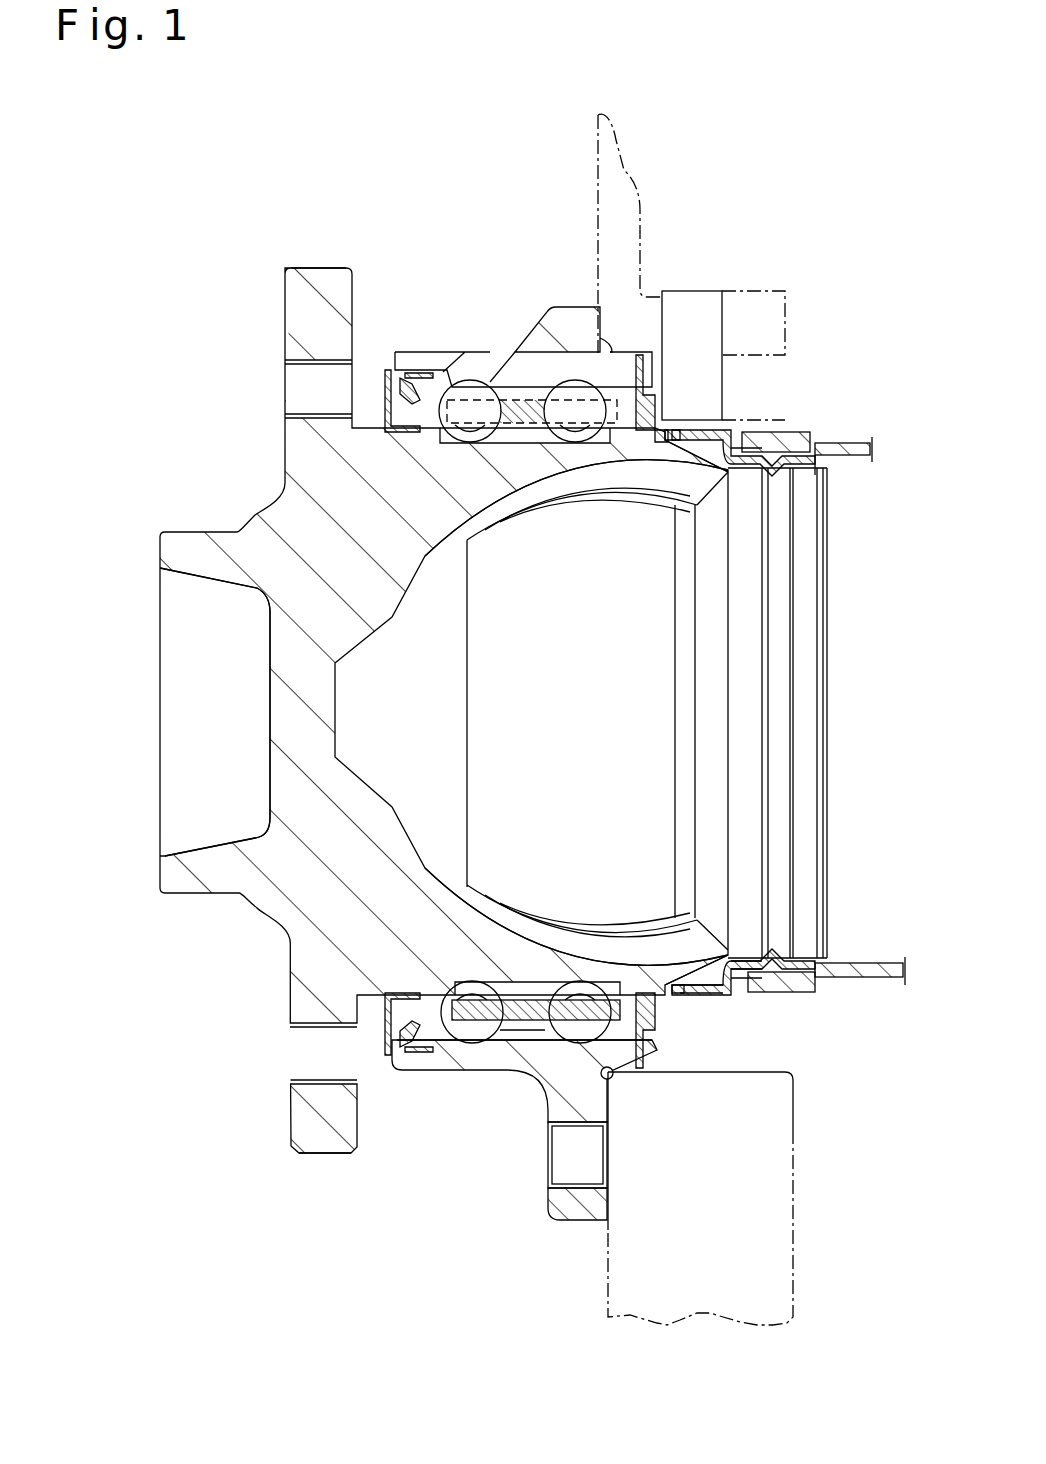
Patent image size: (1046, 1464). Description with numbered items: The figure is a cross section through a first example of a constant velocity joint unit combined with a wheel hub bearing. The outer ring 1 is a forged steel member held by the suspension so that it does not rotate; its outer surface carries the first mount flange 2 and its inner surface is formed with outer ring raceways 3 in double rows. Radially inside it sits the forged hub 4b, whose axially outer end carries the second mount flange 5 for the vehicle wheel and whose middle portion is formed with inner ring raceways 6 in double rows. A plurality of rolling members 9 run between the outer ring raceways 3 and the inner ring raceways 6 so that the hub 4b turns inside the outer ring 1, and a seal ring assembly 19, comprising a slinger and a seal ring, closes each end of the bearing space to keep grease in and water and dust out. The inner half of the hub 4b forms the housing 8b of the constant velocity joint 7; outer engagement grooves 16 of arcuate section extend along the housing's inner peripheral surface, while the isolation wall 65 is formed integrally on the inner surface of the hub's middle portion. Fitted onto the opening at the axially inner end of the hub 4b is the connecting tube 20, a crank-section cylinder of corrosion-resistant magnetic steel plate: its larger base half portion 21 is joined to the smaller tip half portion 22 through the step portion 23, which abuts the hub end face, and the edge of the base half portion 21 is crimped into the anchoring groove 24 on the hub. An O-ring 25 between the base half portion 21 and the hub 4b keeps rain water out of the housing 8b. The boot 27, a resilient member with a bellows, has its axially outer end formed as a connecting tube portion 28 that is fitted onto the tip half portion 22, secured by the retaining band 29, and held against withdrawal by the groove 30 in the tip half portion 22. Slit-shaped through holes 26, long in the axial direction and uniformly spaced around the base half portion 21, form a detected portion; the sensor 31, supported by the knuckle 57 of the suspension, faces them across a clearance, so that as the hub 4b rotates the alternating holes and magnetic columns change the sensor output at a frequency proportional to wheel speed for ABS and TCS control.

The outer ring 1 is at (585, 318).
The first mount flange 2 is at (578, 1208).
The outer ring raceways 3 is at (458, 380).
The hub 4b is at (310, 478).
The second mount flange 5 is at (300, 318).
The inner ring raceways 6 is at (465, 985).
The constant velocity joint 7 is at (693, 737).
The housing 8b is at (700, 1000).
The rolling members 9 is at (565, 390).
The outer engagement grooves 16 is at (525, 480).
The seal ring assembly 19 is at (393, 395).
The connecting tube 20 is at (712, 438).
The base half portion 21 is at (712, 1000).
The tip half portion 22 is at (822, 965).
The step portion 23 is at (745, 993).
The anchoring groove 24 is at (662, 432).
The O-ring 25 is at (705, 468).
The through holes 26 is at (692, 440).
The boot 27 is at (845, 456).
The connecting tube portion 28 is at (790, 992).
The retaining band 29 is at (740, 437).
The groove 30 is at (760, 440).
The sensor 31 is at (700, 300).
The knuckle 57 is at (795, 1210).
The isolation wall 65 is at (285, 712).